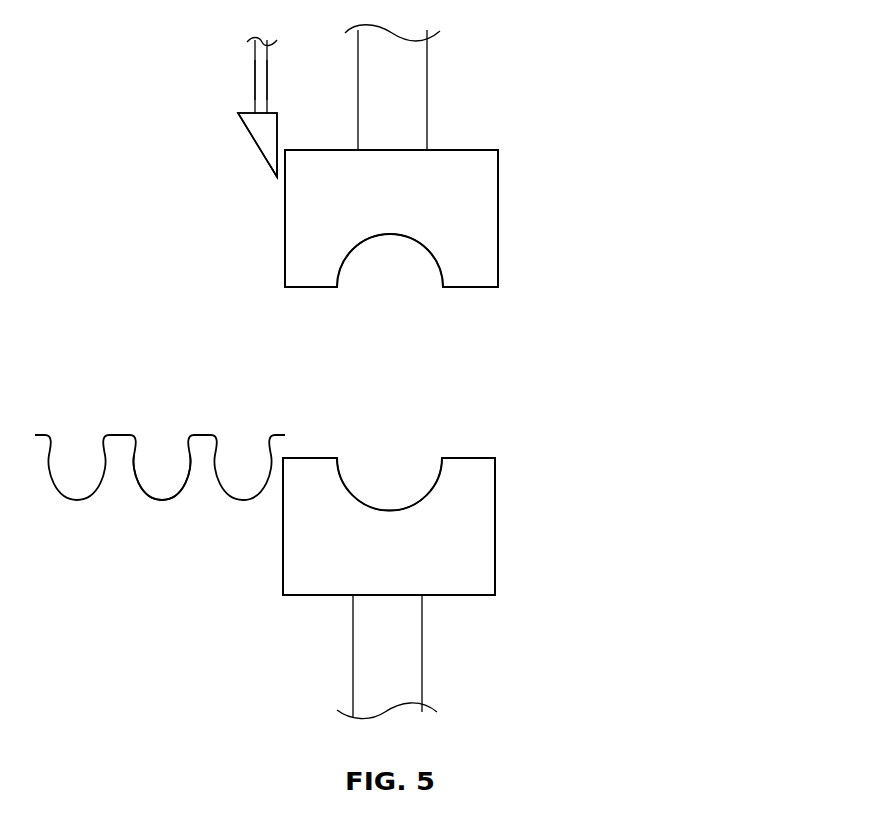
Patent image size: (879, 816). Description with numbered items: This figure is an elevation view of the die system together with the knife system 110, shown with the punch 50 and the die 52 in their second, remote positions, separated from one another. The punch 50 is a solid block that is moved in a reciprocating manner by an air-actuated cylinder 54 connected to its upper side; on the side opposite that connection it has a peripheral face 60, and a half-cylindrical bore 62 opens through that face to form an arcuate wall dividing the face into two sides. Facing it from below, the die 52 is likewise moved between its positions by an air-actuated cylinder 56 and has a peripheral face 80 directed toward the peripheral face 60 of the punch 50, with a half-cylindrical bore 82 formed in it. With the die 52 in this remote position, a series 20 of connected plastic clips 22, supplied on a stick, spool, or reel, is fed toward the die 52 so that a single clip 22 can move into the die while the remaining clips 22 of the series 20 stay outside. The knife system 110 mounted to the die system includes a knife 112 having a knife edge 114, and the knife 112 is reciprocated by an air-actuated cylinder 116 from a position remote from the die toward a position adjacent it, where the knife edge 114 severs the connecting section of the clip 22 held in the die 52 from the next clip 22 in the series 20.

The series of connected clips 20 is at (108, 418).
The clip 22 is at (168, 500).
The punch 50 is at (483, 227).
The die 52 is at (480, 545).
The air-actuated cylinder 54 is at (412, 110).
The air-actuated cylinder 56 is at (398, 630).
The peripheral face 60 is at (313, 292).
The half-cylindrical bore 62 is at (398, 262).
The peripheral face 80 is at (313, 455).
The half-cylindrical bore 82 is at (388, 482).
The knife system 110 is at (197, 80).
The knife 112 is at (260, 130).
The knife edge 114 is at (272, 178).
The air-actuated cylinder 116 is at (263, 82).